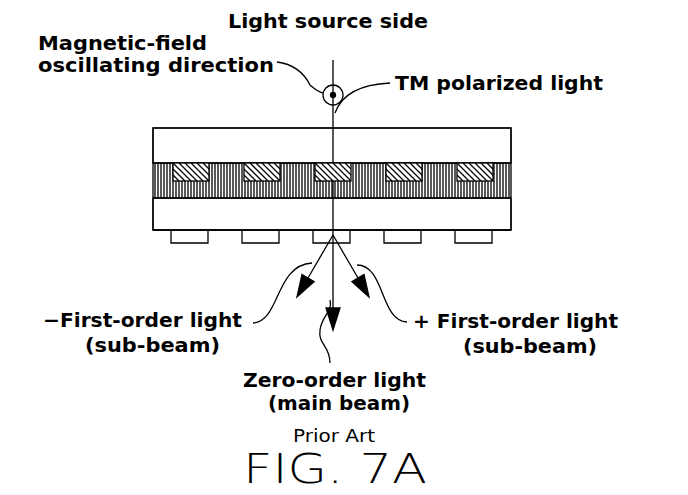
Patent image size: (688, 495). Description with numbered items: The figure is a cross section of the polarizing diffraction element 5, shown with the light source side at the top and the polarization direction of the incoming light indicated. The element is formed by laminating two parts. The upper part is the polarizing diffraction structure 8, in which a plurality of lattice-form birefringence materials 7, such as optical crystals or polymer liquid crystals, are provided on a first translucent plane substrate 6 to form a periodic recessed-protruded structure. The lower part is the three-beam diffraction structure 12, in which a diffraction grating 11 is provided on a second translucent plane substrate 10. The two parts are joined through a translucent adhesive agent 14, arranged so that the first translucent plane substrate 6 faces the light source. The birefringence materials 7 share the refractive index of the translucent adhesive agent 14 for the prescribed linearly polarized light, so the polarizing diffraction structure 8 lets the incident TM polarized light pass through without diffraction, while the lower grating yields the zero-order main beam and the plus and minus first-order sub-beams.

The polarizing diffraction element 5 is at (108, 125).
The first translucent plane substrate 6 is at (153, 148).
The birefringence material 7 is at (177, 160).
The polarizing diffraction structure 8 is at (153, 163).
The second translucent plane substrate 10 is at (153, 215).
The diffraction grating 11 is at (188, 243).
The three-beam diffraction structure 12 is at (175, 243).
The translucent adhesive agent 14 is at (512, 185).